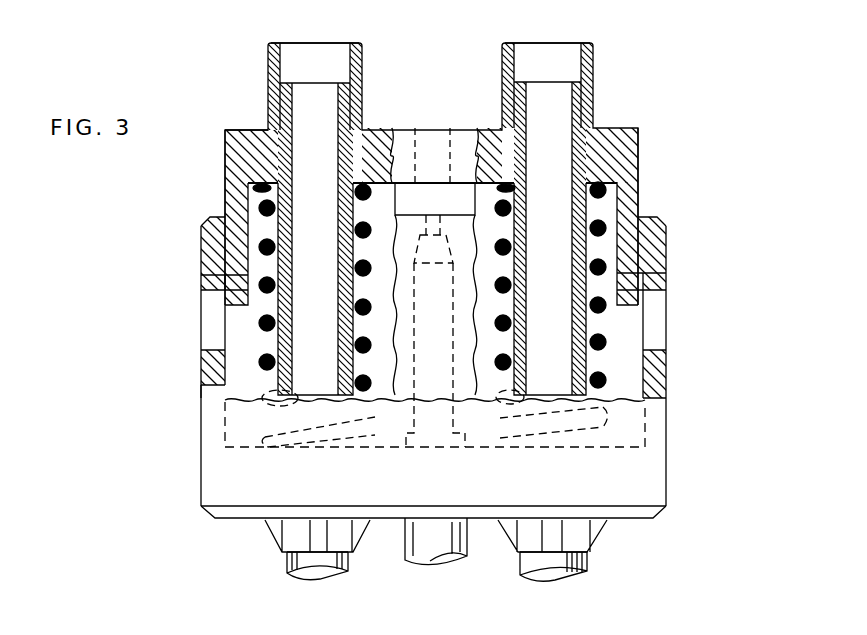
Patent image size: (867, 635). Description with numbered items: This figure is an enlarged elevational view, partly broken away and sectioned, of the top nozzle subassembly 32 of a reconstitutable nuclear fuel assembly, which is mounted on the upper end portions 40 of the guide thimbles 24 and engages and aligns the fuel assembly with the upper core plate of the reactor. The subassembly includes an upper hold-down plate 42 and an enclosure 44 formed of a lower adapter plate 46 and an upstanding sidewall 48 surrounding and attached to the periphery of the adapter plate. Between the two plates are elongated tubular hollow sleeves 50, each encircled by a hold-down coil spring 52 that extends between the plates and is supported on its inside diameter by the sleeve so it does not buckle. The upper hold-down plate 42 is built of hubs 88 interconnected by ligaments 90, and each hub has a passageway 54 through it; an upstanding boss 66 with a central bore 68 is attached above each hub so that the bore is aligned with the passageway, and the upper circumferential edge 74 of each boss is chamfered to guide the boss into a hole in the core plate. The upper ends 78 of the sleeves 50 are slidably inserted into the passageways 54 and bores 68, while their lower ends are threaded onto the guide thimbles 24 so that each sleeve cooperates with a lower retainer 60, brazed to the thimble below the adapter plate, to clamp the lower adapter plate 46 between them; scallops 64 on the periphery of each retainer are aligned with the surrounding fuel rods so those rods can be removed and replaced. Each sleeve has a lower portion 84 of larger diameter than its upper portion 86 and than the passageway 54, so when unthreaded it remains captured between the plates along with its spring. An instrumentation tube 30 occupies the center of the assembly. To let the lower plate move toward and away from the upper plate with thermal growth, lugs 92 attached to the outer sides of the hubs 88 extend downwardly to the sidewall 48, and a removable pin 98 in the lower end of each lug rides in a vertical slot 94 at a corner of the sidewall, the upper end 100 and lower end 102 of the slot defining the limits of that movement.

The guide thimbles 24 is at (285, 568).
The instrumentation tube 30 is at (428, 546).
The top nozzle subassembly 32 is at (214, 133).
The upper end portions 40 is at (287, 559).
The upper hold-down plate 42 is at (634, 126).
The enclosure 44 is at (669, 399).
The lower adapter plate 46 is at (230, 513).
The upstanding sidewall 48 is at (200, 368).
The hollow sleeves 50 is at (273, 228).
The hold-down coil springs 52 is at (262, 196).
The passageways 54 is at (345, 157).
The lower retainers 60 is at (266, 524).
The scallops 64 is at (335, 535).
The upstanding bosses 66 is at (270, 65).
The central bores 68 is at (282, 68).
The upper circumferential edge 74 is at (270, 45).
The upper ends 78 is at (317, 100).
The lower portion 84 is at (285, 378).
The upper portion 86 is at (278, 163).
The hubs 88 is at (256, 152).
The ligaments 90 is at (413, 128).
The lugs 92 is at (225, 211).
The vertical slot 94 is at (212, 327).
The pin 98 is at (200, 282).
The upper end 100 is at (200, 293).
The lower end 102 is at (200, 345).